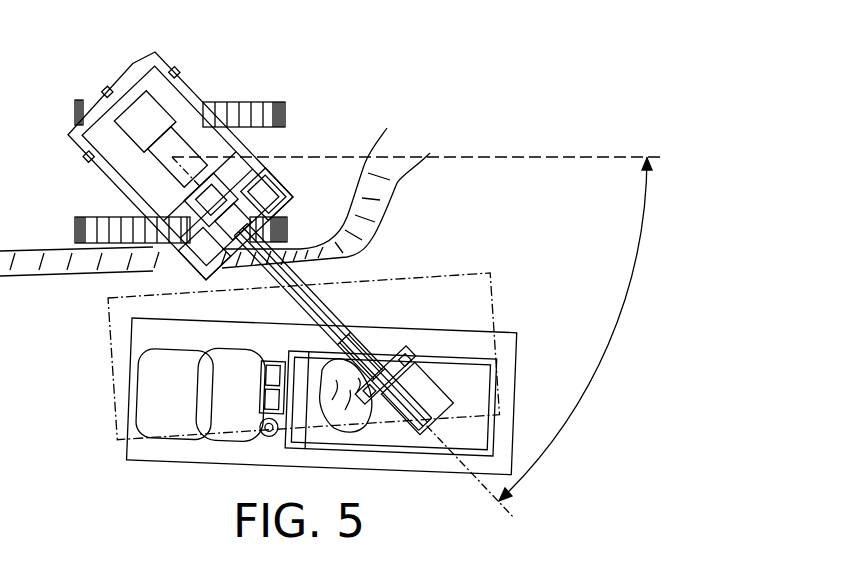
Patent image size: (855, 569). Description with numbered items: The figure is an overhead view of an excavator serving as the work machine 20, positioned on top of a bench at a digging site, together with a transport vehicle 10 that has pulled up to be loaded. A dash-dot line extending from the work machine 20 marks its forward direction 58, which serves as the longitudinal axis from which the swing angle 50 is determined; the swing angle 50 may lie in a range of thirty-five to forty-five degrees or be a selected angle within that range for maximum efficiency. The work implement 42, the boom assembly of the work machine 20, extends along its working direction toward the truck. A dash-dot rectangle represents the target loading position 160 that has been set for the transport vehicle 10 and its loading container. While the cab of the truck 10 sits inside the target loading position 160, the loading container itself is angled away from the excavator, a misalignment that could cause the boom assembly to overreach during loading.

The transport vehicle 10 is at (143, 364).
The work machine 20 is at (156, 50).
The work implement 42 is at (310, 294).
The swing angle 50 is at (606, 355).
The forward direction 58 is at (491, 157).
The target loading position 160 is at (481, 272).